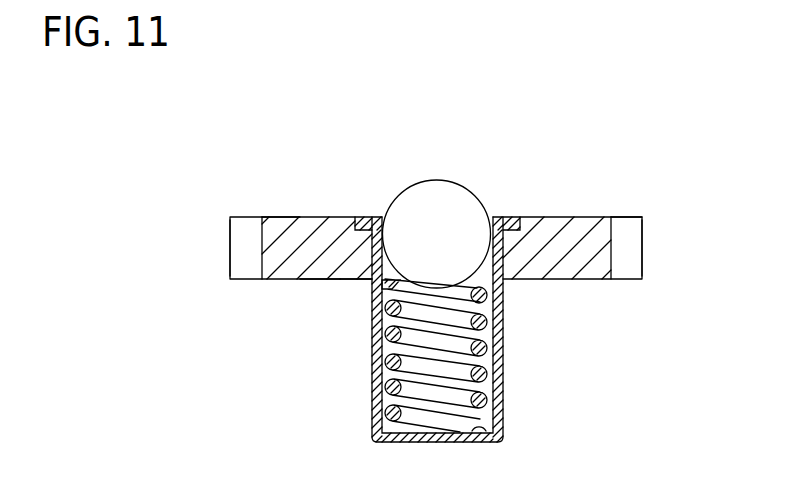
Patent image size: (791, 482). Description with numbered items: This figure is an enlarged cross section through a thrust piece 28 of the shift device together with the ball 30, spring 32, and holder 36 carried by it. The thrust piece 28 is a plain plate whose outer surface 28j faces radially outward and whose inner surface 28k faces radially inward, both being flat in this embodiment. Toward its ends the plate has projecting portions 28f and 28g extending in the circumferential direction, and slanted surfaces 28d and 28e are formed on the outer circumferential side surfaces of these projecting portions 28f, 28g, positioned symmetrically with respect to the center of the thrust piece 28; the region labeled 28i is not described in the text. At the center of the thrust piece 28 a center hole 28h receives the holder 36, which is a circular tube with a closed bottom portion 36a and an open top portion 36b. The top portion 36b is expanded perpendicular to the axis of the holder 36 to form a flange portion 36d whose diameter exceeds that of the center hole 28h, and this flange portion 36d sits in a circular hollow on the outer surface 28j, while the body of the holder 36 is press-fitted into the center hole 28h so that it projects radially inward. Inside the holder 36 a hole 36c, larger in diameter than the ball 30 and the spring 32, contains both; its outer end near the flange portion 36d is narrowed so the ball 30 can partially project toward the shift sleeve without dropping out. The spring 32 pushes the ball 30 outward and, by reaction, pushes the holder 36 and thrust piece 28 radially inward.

The thrust piece 28 is at (583, 232).
The slanted surface 28d is at (245, 250).
The slanted surface 28e is at (627, 258).
The projecting portion 28f is at (227, 252).
The projecting portion 28g is at (643, 248).
The center hole 28h is at (353, 248).
The upper surface right portion of plate 28i is at (625, 217).
The outer surface 28j is at (283, 217).
The inner surface 28k is at (328, 250).
The ball 30 is at (443, 250).
The spring 32 is at (487, 318).
The holder 36 is at (495, 362).
The bottom portion 36a is at (438, 440).
The top portion 36b is at (492, 216).
The hole 36c is at (491, 284).
The flange portion 36d is at (368, 216).